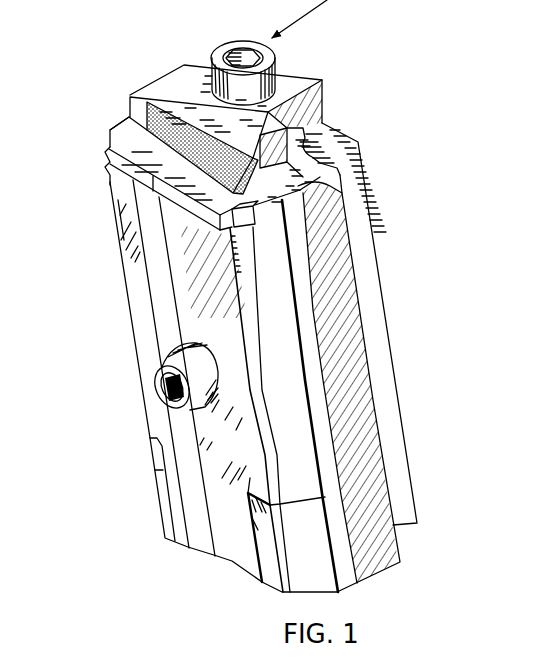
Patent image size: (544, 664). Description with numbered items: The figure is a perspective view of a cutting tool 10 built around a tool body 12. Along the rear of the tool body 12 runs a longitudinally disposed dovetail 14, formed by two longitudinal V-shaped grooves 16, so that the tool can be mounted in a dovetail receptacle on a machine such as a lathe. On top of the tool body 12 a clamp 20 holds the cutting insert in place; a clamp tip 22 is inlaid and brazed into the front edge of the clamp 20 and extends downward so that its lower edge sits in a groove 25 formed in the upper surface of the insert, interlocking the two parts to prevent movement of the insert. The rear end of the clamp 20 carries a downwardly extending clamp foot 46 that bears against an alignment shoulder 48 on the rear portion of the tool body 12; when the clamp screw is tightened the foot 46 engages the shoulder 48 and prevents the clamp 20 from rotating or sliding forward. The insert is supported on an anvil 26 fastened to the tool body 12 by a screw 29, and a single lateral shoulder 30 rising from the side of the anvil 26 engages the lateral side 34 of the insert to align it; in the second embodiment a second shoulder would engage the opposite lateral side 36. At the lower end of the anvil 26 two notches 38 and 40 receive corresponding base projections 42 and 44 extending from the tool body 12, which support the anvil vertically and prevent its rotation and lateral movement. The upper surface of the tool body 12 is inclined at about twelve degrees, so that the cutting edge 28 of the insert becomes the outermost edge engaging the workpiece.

The cutting tool 10 is at (110, 80).
The tool body 12 is at (338, 302).
The dovetail 14 is at (367, 177).
The V-shaped groove 16 is at (332, 156).
The clamp 20 is at (227, 105).
The clamp tip 22 is at (112, 128).
The groove 25 is at (105, 153).
The anvil 26 is at (130, 276).
The cutting edge 28 is at (108, 182).
The screw 29 is at (156, 372).
The lateral shoulder 30 is at (325, 178).
The lateral side 34 is at (257, 220).
The lateral side 36 is at (110, 146).
The notch 38 is at (248, 503).
The notch 40 is at (150, 440).
The base projection 42 is at (268, 537).
The base projection 44 is at (163, 497).
The clamp foot 46 is at (313, 108).
The alignment shoulder 48 is at (302, 140).